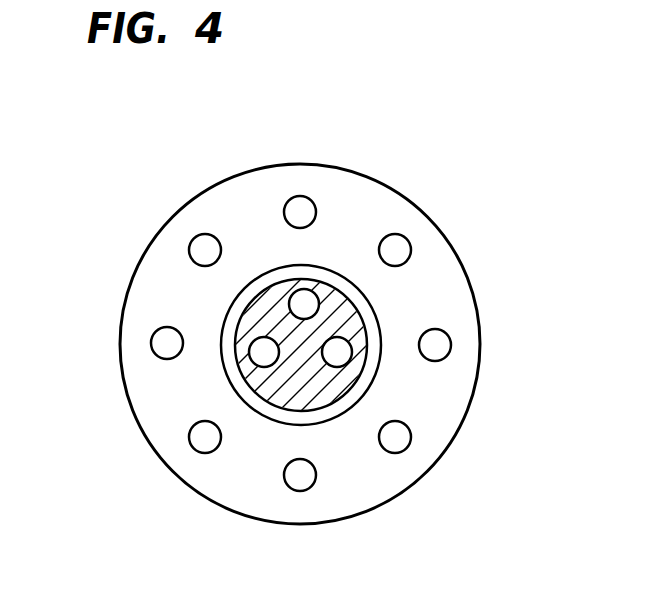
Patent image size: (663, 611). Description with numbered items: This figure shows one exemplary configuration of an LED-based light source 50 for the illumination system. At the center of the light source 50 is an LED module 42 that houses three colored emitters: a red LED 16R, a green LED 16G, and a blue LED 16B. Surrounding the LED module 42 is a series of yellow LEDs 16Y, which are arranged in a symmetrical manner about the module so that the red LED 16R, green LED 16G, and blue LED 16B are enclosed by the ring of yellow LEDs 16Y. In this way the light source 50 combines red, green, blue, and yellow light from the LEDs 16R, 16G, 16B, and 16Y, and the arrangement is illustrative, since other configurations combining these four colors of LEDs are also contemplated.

The LED-based light source 50 is at (490, 205).
The LED module 42 is at (358, 313).
The red LED 16R is at (300, 298).
The green LED 16G is at (350, 357).
The blue LED 16B is at (258, 352).
The yellow LED 16Y is at (298, 348).